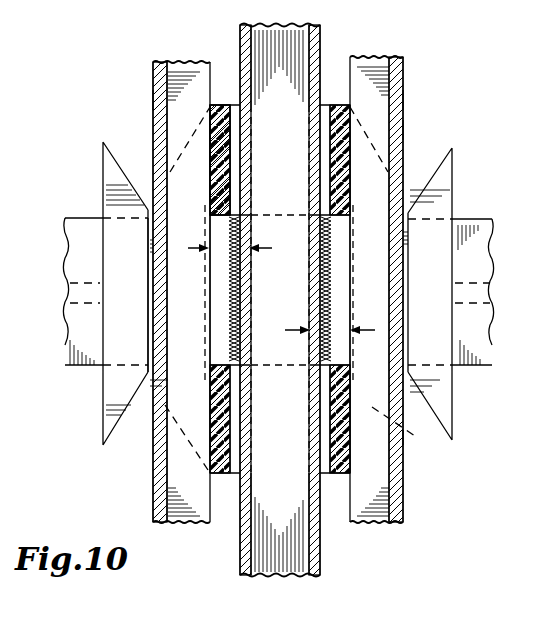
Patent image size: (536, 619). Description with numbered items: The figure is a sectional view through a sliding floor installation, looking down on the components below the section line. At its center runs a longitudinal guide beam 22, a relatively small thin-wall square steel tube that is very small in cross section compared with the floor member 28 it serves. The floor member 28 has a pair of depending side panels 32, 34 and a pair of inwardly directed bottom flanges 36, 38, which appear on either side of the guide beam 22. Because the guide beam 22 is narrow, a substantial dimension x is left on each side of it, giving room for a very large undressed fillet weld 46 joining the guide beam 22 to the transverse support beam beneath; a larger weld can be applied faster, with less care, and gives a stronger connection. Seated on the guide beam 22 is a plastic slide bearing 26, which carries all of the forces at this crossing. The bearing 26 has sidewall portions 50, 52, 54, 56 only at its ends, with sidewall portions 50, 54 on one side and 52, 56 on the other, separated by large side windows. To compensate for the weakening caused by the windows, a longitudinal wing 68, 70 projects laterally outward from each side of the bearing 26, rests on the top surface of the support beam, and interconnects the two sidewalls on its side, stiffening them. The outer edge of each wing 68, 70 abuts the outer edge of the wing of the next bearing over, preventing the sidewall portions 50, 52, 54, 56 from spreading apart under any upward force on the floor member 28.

The longitudinal guide beam 22 is at (320, 551).
The plastic slide bearing 26 is at (347, 437).
The floor member 28 is at (410, 95).
The side panel 32 is at (403, 131).
The side panel 34 is at (158, 98).
The bottom flange 36 is at (185, 72).
The bottom flange 38 is at (372, 62).
The fillet weld 46 is at (340, 262).
The sidewall portion 50 is at (232, 112).
The sidewall portion 52 is at (342, 112).
The sidewall portion 54 is at (213, 471).
The sidewall portion 56 is at (346, 452).
The longitudinal wing 68 is at (160, 420).
The longitudinal wing 70 is at (112, 394).